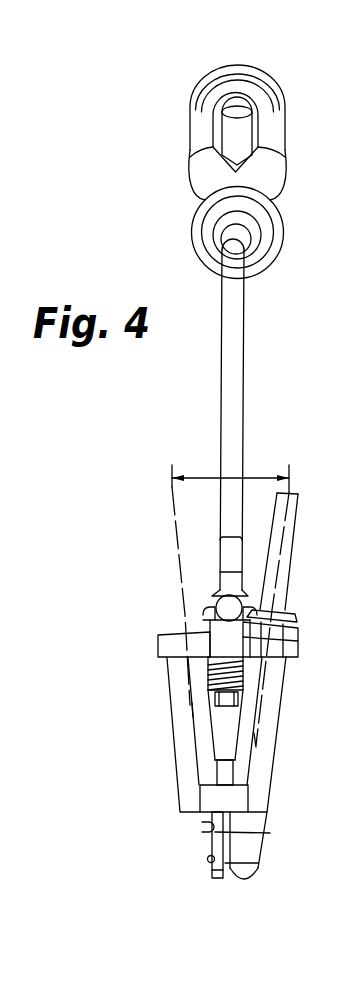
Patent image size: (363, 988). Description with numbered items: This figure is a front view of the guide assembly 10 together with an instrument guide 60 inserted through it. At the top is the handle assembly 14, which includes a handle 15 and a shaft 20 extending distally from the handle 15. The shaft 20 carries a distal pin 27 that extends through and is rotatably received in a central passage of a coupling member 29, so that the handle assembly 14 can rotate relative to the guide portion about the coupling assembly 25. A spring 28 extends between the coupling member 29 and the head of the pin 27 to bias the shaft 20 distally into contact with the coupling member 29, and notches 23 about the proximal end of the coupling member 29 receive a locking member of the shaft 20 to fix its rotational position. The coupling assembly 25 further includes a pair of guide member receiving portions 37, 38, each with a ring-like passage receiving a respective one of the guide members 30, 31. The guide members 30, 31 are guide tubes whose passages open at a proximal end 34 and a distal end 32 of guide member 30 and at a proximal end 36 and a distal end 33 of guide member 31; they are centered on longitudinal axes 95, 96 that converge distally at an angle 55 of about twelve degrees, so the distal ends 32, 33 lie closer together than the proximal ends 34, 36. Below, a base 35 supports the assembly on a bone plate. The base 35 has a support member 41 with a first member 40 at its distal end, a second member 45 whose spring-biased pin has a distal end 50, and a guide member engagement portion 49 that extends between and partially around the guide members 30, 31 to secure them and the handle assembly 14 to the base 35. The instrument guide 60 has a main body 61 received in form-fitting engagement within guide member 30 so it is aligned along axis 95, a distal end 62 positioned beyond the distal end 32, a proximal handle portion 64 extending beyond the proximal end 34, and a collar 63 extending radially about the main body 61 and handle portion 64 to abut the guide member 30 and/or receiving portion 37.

The guide assembly 10 is at (152, 402).
The handle assembly 14 is at (212, 256).
The handle 15 is at (190, 152).
The shaft 20 is at (252, 352).
The notches 23 is at (192, 658).
The coupling assembly 25 is at (208, 592).
The distal pin 27 is at (240, 708).
The spring 28 is at (208, 674).
The coupling member 29 is at (246, 604).
The guide member 30 is at (280, 730).
The guide member 31 is at (172, 740).
The distal end of guide member 32 is at (267, 813).
The distal end of guide member 33 is at (200, 813).
The proximal end of guide member 34 is at (299, 640).
The base 35 is at (234, 834).
The proximal end of guide member 36 is at (159, 631).
The guide member receiving portion 37 is at (298, 657).
The guide member receiving portion 38 is at (157, 643).
The first member 40 is at (224, 892).
The support member 41 is at (207, 858).
The second member 45 is at (188, 825).
The guide member engagement portion 49 is at (200, 787).
The distal end of pin 50 is at (212, 876).
The angle 55 is at (258, 477).
The instrument guide 60 is at (295, 606).
The main body 61 is at (258, 856).
The distal end of instrument guide 62 is at (247, 884).
The collar 63 is at (298, 623).
The proximal handle portion 64 is at (299, 493).
The longitudinal axis 95 is at (290, 467).
The longitudinal axis 96 is at (171, 478).